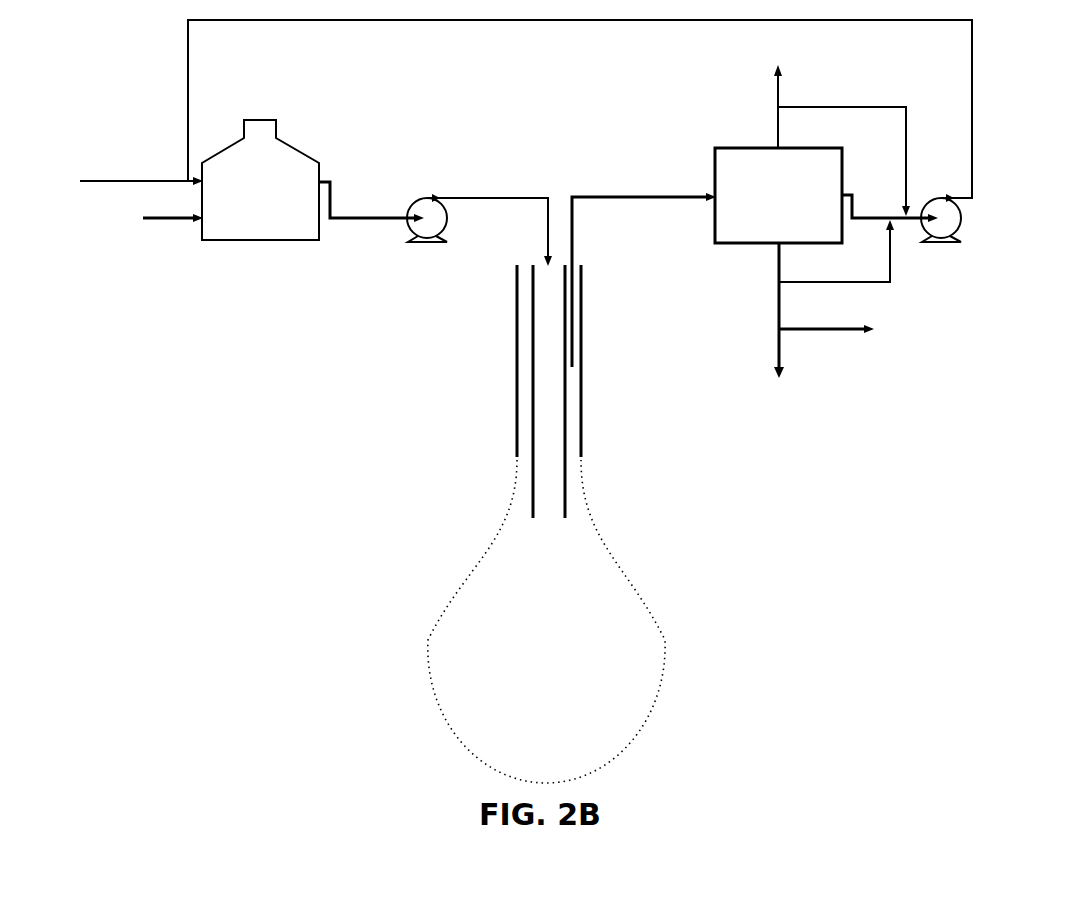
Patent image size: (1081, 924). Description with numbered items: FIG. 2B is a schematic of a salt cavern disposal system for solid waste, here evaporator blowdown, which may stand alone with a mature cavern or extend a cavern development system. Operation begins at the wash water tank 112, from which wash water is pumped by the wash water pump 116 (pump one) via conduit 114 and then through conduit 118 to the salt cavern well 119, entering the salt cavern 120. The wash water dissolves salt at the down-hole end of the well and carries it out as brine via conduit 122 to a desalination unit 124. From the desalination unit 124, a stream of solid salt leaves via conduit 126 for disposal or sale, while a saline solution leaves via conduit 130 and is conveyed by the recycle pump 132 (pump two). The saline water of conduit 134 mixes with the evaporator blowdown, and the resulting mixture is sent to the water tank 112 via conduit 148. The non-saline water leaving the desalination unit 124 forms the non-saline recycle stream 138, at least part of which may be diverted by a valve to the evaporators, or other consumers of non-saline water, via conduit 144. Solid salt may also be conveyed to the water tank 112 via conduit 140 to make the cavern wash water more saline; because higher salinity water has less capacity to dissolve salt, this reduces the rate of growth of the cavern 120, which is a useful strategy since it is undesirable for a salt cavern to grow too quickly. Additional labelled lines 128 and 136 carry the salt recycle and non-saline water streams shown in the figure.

The wash water tank 112 is at (260, 180).
The conduit 114 is at (371, 202).
The wash water pump 116 is at (430, 243).
The conduit 118 is at (489, 224).
The salt cavern well 119 is at (487, 391).
The salt cavern 120 is at (546, 621).
The conduit 122 is at (644, 262).
The desalination unit 124 is at (778, 195).
The conduit 126 is at (774, 319).
The salt recycle line 128 is at (836, 265).
The conduit 130 is at (890, 217).
The recycle pump 132 is at (947, 241).
The conduit 134 is at (625, 111).
The non-saline water line 136 is at (726, 127).
The conduit 138 is at (844, 147).
The conduit 140 is at (511, 282).
The conduit 144 is at (780, 72).
The conduit 148 is at (125, 188).